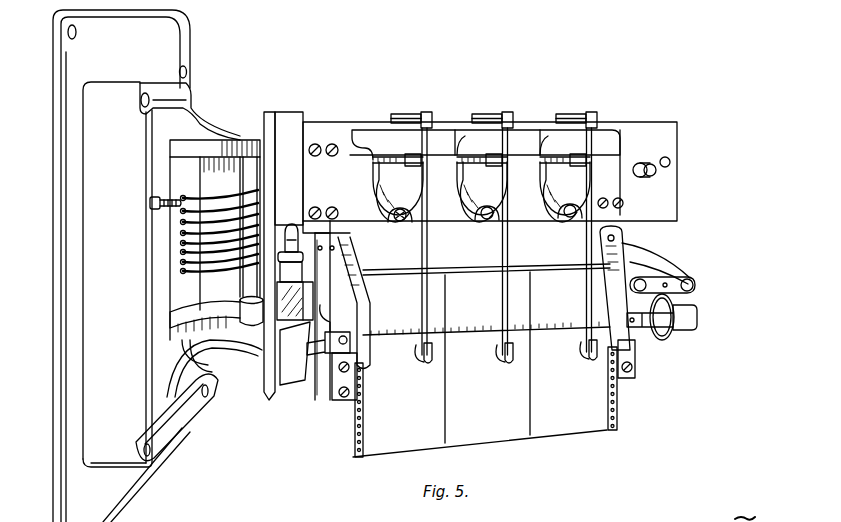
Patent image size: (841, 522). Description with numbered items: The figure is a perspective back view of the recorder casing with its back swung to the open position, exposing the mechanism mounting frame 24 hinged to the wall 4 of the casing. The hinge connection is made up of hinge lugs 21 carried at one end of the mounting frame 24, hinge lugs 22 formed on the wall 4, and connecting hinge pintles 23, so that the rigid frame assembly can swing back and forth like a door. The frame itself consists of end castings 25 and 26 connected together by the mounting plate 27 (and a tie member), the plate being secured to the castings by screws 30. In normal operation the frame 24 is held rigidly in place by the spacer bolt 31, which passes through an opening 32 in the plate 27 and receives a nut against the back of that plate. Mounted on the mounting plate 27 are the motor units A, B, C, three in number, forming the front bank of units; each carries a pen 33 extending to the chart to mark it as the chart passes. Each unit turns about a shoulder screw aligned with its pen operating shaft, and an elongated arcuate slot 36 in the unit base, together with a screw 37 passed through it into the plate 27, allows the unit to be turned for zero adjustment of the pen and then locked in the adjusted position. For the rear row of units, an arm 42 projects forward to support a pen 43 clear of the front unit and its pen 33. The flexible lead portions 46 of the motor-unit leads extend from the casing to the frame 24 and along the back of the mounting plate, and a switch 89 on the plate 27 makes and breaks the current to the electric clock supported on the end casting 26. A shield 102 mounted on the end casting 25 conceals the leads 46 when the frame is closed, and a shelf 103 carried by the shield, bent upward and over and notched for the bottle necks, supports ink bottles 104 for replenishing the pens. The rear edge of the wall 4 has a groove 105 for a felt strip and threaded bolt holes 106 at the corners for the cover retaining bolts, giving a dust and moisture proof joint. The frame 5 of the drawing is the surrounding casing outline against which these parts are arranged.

The wall 4 is at (118, 84).
The frame 5 is at (182, 48).
The hinge lugs 21 is at (250, 157).
The hinge lugs 22 is at (225, 140).
The hinge pintles 23 is at (240, 303).
The mechanism mounting frame 24 is at (452, 124).
The end casting 25 is at (326, 392).
The end casting 26 is at (627, 238).
The mounting plate 27 is at (660, 122).
The screws 30 is at (315, 143).
The spacer bolt 31 is at (150, 201).
The opening 32 is at (670, 160).
The pen 33 is at (420, 261).
The arcuate slot 36 is at (394, 222).
The screw 37 is at (402, 221).
The arm 42 is at (578, 114).
The pen 43 is at (430, 250).
The flexible lead portions 46 is at (222, 196).
The switch 89 is at (657, 170).
The shield 102 is at (285, 118).
The shelf 103 is at (288, 324).
The ink bottles 104 is at (274, 388).
The groove 105 is at (192, 425).
The threaded bolt holes 106 is at (150, 452).
The motor unit A is at (382, 128).
The motor unit B is at (520, 130).
The motor unit C is at (610, 130).